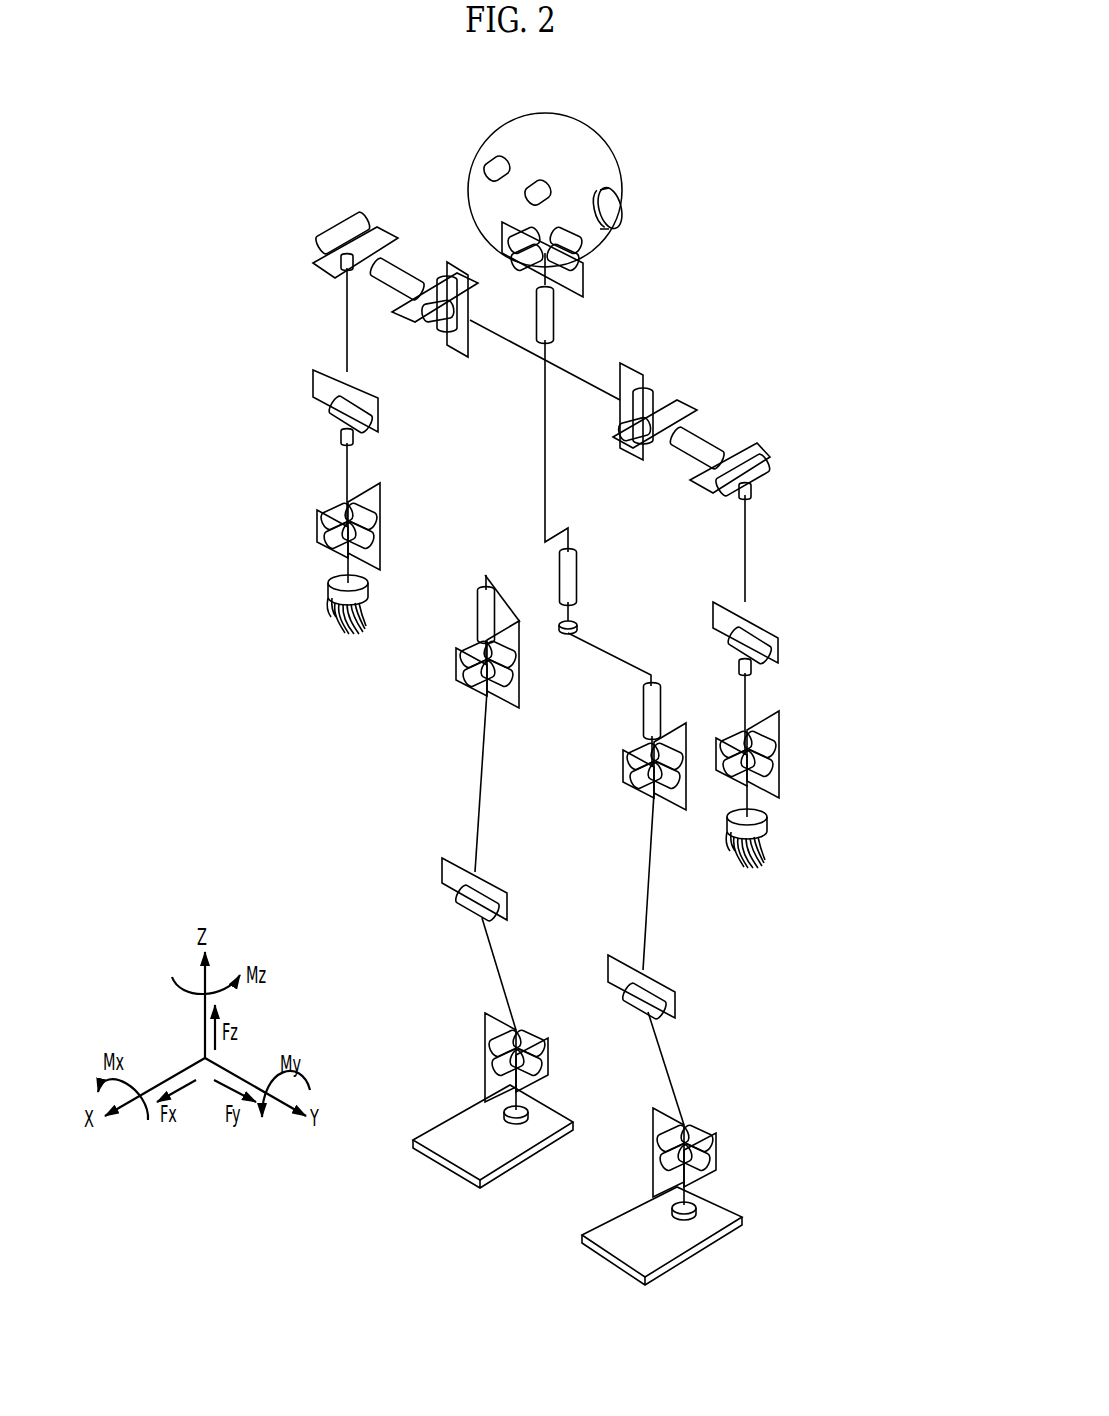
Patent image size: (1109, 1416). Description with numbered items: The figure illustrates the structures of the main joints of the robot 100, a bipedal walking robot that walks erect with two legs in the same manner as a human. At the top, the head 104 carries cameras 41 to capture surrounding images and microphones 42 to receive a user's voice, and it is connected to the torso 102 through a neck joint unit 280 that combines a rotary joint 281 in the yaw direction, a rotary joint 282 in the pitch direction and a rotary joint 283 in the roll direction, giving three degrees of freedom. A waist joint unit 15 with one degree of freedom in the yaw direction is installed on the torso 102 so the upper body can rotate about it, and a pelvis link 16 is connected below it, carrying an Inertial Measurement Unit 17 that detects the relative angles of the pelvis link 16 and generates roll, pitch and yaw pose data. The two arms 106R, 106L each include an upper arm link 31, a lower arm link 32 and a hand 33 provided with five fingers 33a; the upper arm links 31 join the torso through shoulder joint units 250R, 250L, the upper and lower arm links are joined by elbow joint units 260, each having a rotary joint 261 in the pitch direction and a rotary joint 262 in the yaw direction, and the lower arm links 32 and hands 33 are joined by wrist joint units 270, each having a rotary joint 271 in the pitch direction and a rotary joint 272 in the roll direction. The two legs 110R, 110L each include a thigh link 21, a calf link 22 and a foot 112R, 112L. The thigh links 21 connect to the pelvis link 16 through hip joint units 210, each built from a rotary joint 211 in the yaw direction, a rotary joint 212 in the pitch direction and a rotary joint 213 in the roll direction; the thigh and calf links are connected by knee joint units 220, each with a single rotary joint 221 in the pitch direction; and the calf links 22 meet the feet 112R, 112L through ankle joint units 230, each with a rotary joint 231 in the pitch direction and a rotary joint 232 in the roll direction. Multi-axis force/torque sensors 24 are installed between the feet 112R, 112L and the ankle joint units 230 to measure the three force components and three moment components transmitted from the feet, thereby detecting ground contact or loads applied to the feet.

The robot 100 is at (840, 126).
The torso 102 is at (544, 420).
The head 104 is at (614, 134).
The right arm 106R is at (233, 392).
The left arm 106L is at (837, 615).
The right leg 110R is at (373, 829).
The left leg 110L is at (707, 932).
The right foot 112R is at (445, 1164).
The left foot 112L is at (600, 1263).
The waist joint unit 15 is at (577, 580).
The pelvis link 16 is at (622, 650).
The Inertial Measurement Unit (IMU) 17 is at (579, 625).
The thigh link 21 is at (481, 790).
The calf link 22 is at (494, 970).
The multi-axis force/torque sensor 24 is at (520, 1119).
The upper arm link 31 is at (346, 318).
The lower arm link 32 is at (346, 465).
The hand 33 is at (322, 605).
The fingers 33a is at (345, 625).
The cameras 41 is at (535, 192).
The microphones 42 is at (602, 210).
The hip joint unit 210 is at (434, 681).
The rotary joint in the yaw direction 211 is at (478, 625).
The rotary joint in the pitch direction 212 is at (512, 675).
The rotary joint in the roll direction 213 is at (470, 701).
The knee joint unit 220 is at (434, 911).
The rotary joint in the pitch direction 221 is at (476, 897).
The ankle joint unit 230 is at (466, 1052).
The rotary joint in the pitch direction 231 is at (542, 1067).
The rotary joint in the roll direction 232 is at (530, 1046).
The right shoulder joint unit 250R is at (344, 212).
The left shoulder joint unit 250L is at (705, 394).
The elbow joint unit 260 is at (306, 371).
The rotary joint in the pitch direction 261 is at (356, 402).
The rotary joint in the yaw direction 262 is at (360, 438).
The wrist joint unit 270 is at (312, 548).
The rotary joint in the pitch direction 271 is at (372, 538).
The rotary joint in the roll direction 272 is at (377, 520).
The neck joint unit 280 is at (608, 292).
The rotary joint in the yaw direction 281 is at (552, 318).
The rotary joint in the pitch direction 282 is at (577, 253).
The rotary joint in the roll direction 283 is at (518, 256).